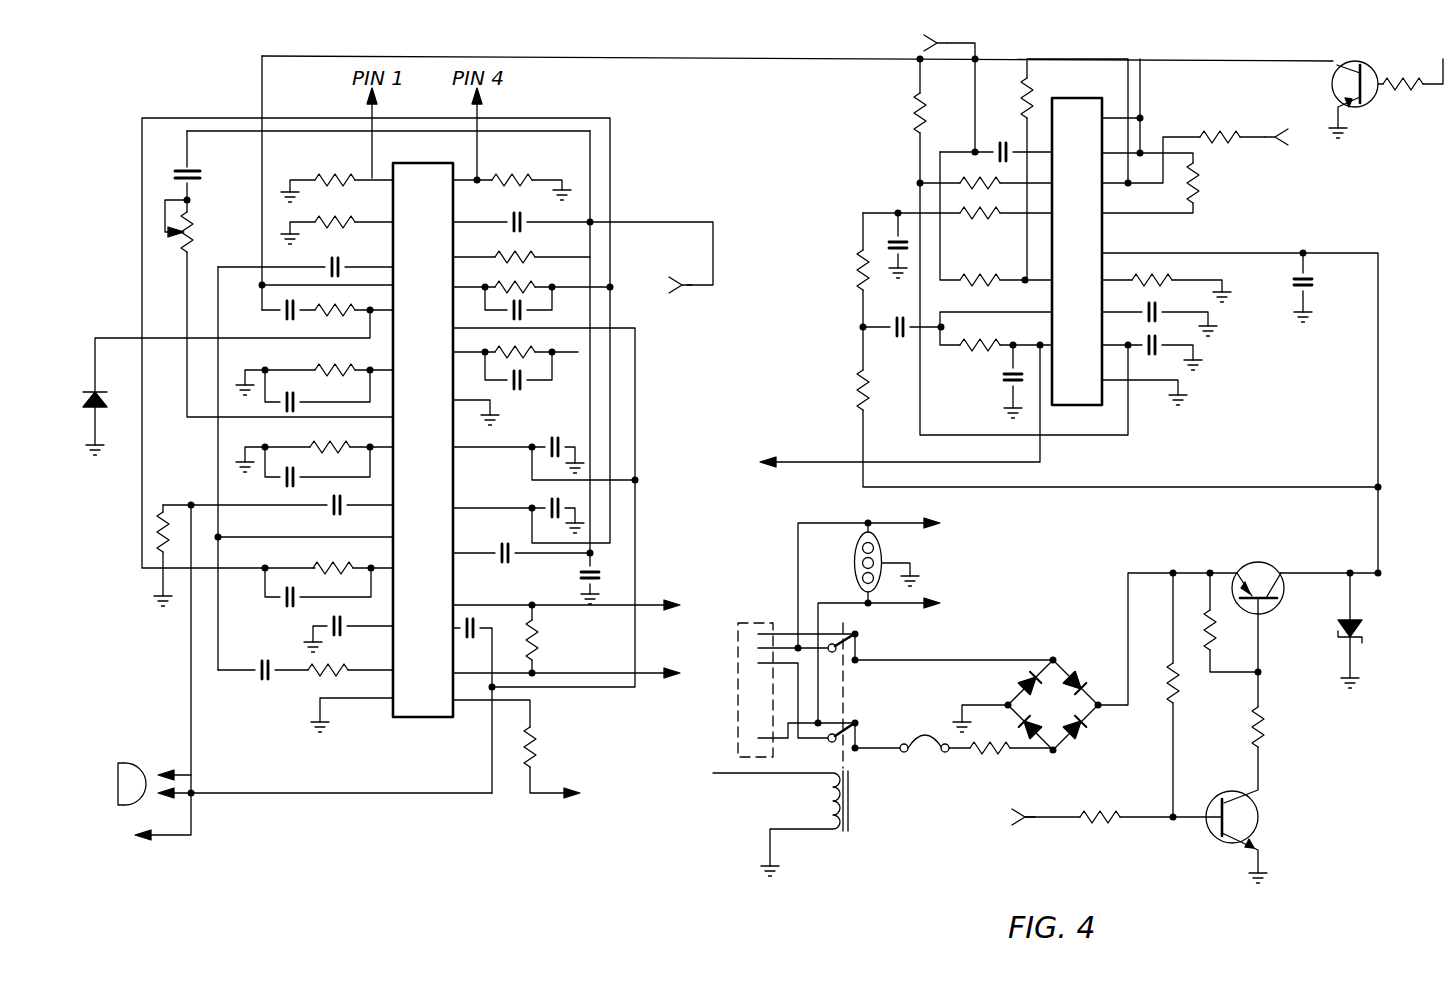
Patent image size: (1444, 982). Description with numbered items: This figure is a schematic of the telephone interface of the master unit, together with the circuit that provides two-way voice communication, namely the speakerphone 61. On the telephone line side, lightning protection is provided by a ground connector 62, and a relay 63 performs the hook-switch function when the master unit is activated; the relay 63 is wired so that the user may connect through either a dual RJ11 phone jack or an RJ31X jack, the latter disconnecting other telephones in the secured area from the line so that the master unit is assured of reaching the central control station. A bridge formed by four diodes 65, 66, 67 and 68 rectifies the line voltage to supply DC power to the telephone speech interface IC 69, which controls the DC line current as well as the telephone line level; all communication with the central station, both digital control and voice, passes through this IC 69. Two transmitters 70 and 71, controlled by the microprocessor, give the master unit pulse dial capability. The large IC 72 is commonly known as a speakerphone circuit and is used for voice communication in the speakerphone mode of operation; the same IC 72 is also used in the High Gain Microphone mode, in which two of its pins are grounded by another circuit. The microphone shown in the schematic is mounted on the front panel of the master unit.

The speakerphone 61 is at (874, 607).
The ground connector 62 is at (880, 552).
The relay 63 is at (838, 840).
The diode 65 is at (1022, 684).
The diode 66 is at (1076, 667).
The diode 67 is at (1034, 732).
The diode 68 is at (1086, 733).
The telephone speech interface IC 69 is at (1091, 242).
The transmitter 70 is at (1253, 562).
The transmitter 71 is at (1258, 820).
The speakerphone circuit IC 72 is at (438, 391).